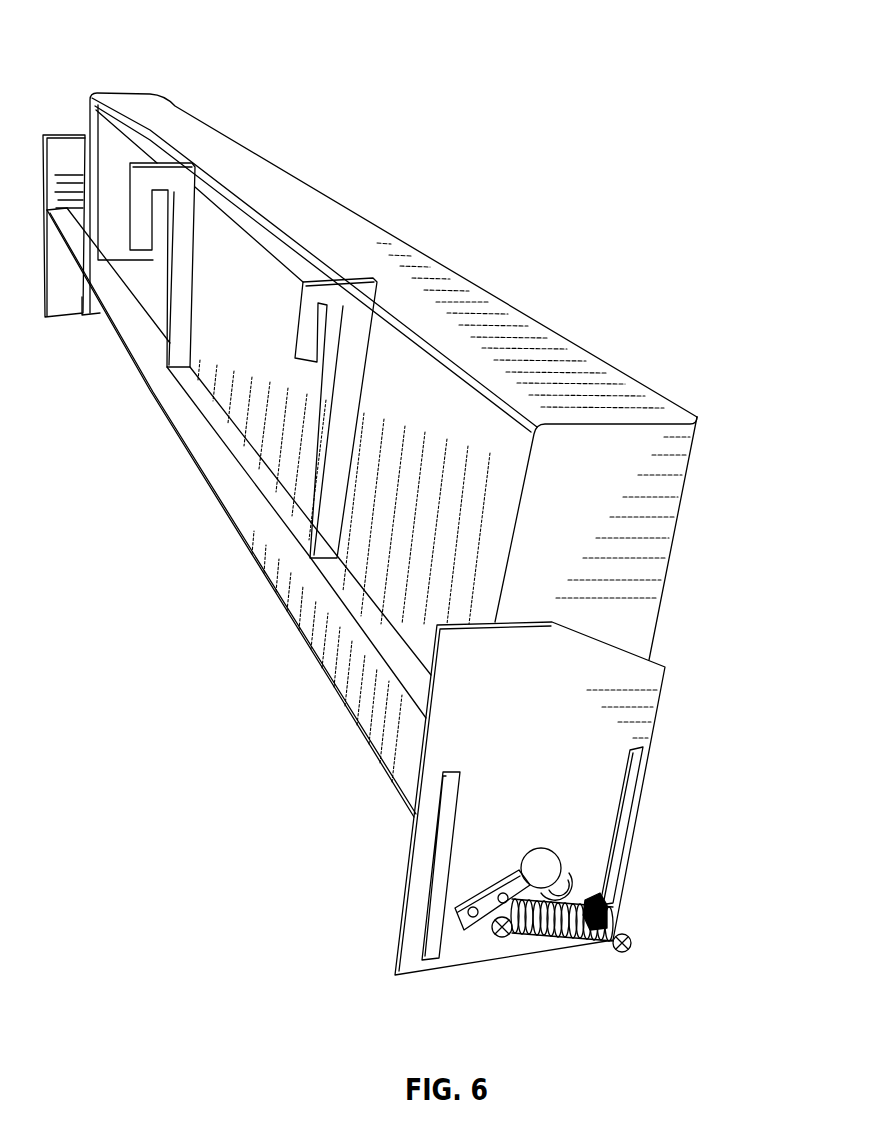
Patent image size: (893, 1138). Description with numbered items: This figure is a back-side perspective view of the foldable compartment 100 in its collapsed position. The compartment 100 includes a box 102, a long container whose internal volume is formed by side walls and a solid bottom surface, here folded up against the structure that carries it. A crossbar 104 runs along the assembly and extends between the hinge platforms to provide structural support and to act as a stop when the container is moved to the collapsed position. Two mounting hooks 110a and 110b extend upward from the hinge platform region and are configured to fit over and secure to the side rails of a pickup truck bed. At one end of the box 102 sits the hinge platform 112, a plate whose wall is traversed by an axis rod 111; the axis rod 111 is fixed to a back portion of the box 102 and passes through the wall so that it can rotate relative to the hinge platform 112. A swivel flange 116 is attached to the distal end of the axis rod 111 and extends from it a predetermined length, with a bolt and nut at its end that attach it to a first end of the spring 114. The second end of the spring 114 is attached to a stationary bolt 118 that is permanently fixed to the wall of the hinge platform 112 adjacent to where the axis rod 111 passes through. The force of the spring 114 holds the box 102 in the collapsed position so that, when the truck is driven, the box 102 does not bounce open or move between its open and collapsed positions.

The compartment 100 is at (674, 136).
The box 102 is at (271, 179).
The crossbar 104 is at (213, 468).
The mounting hook 110a is at (353, 275).
The mounting hook 110b is at (159, 165).
The hinge platform 112 is at (614, 970).
The axis rod 111 is at (522, 937).
The spring 114 is at (573, 938).
The swivel flange 116 is at (508, 887).
The stationary bolt 118 is at (614, 930).